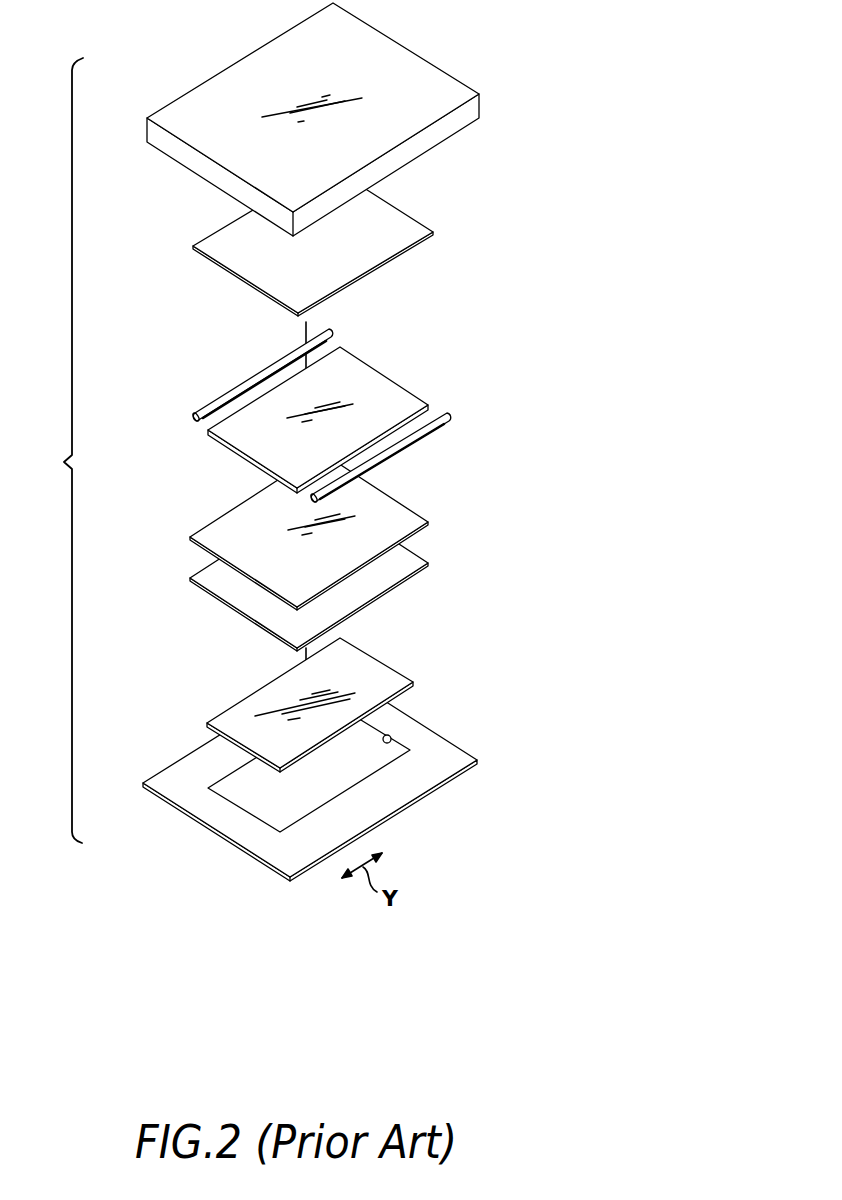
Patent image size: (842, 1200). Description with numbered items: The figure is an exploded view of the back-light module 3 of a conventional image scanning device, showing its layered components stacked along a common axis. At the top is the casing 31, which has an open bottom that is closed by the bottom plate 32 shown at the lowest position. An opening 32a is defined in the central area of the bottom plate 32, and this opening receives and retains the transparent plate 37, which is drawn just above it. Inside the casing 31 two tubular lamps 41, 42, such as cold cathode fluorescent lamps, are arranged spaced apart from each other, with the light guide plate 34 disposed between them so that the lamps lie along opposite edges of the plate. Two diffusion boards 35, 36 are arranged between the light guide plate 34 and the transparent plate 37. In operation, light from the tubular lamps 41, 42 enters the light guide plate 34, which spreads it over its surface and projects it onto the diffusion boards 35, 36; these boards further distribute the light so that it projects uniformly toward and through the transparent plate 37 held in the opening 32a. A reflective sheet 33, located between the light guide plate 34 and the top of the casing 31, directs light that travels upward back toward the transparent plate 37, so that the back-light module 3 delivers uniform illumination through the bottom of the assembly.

The back-light module 3 is at (58, 450).
The casing 31 is at (425, 75).
The bottom plate 32 is at (410, 783).
The opening 32a is at (397, 738).
The reflective sheet 33 is at (403, 228).
The light guide plate 34 is at (367, 375).
The diffusion board 35 is at (413, 522).
The diffusion board 36 is at (413, 567).
The transparent plate 37 is at (238, 710).
The tubular lamp 41 is at (270, 363).
The tubular lamp 42 is at (430, 432).